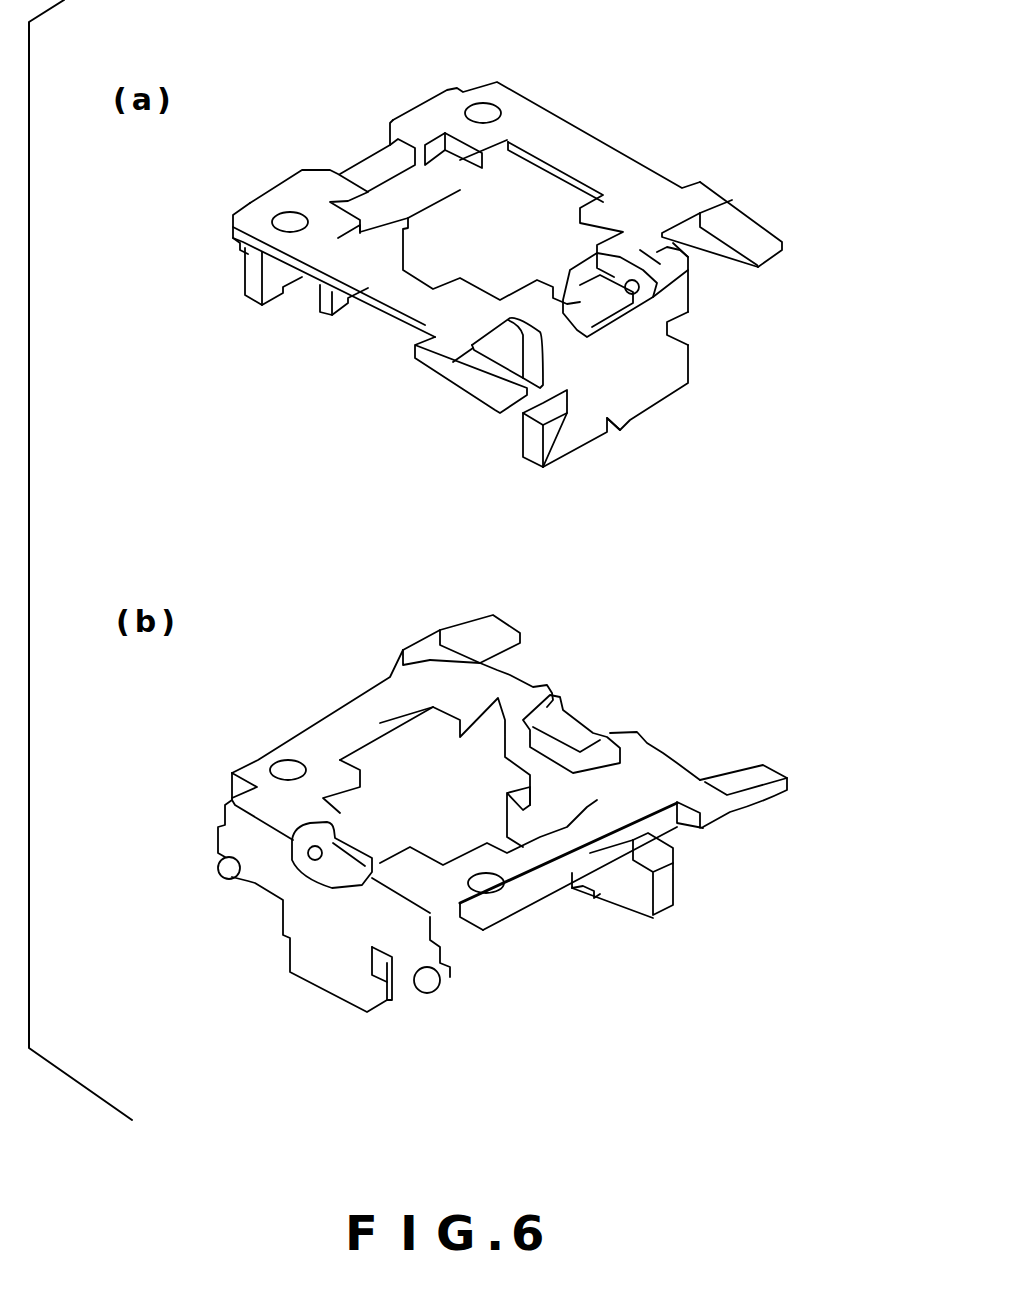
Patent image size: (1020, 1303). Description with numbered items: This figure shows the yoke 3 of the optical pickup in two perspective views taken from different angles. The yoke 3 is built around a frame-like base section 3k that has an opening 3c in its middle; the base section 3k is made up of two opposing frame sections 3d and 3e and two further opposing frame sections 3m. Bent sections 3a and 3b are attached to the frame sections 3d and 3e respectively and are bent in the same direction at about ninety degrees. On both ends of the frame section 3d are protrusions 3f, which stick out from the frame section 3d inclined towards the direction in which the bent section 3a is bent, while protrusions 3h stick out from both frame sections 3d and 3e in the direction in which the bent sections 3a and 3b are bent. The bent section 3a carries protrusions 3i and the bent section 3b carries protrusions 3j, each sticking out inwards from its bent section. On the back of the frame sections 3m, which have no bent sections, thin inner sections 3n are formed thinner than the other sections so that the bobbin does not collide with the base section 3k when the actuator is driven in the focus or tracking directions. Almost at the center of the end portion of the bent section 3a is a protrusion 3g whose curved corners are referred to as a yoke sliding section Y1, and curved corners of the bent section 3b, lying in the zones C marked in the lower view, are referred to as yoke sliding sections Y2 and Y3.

The yoke 3 is at (623, 187).
The bent section 3a is at (640, 380).
The bent section 3b is at (378, 227).
The opening 3c is at (550, 160).
The frame section 3d is at (667, 263).
The frame section 3e is at (413, 122).
The protrusion 3f is at (747, 223).
The protrusion 3g is at (620, 433).
The protrusion 3h is at (580, 283).
The protrusion 3i is at (677, 333).
The protrusion 3j is at (407, 227).
The base section 3k is at (625, 187).
The frame section 3m is at (541, 140).
The thin inner section 3n is at (560, 183).
The yoke sliding section Y1 is at (645, 428).
The yoke sliding section Y2 is at (470, 185).
The yoke sliding section Y3 is at (250, 308).
The zone C is at (212, 860).